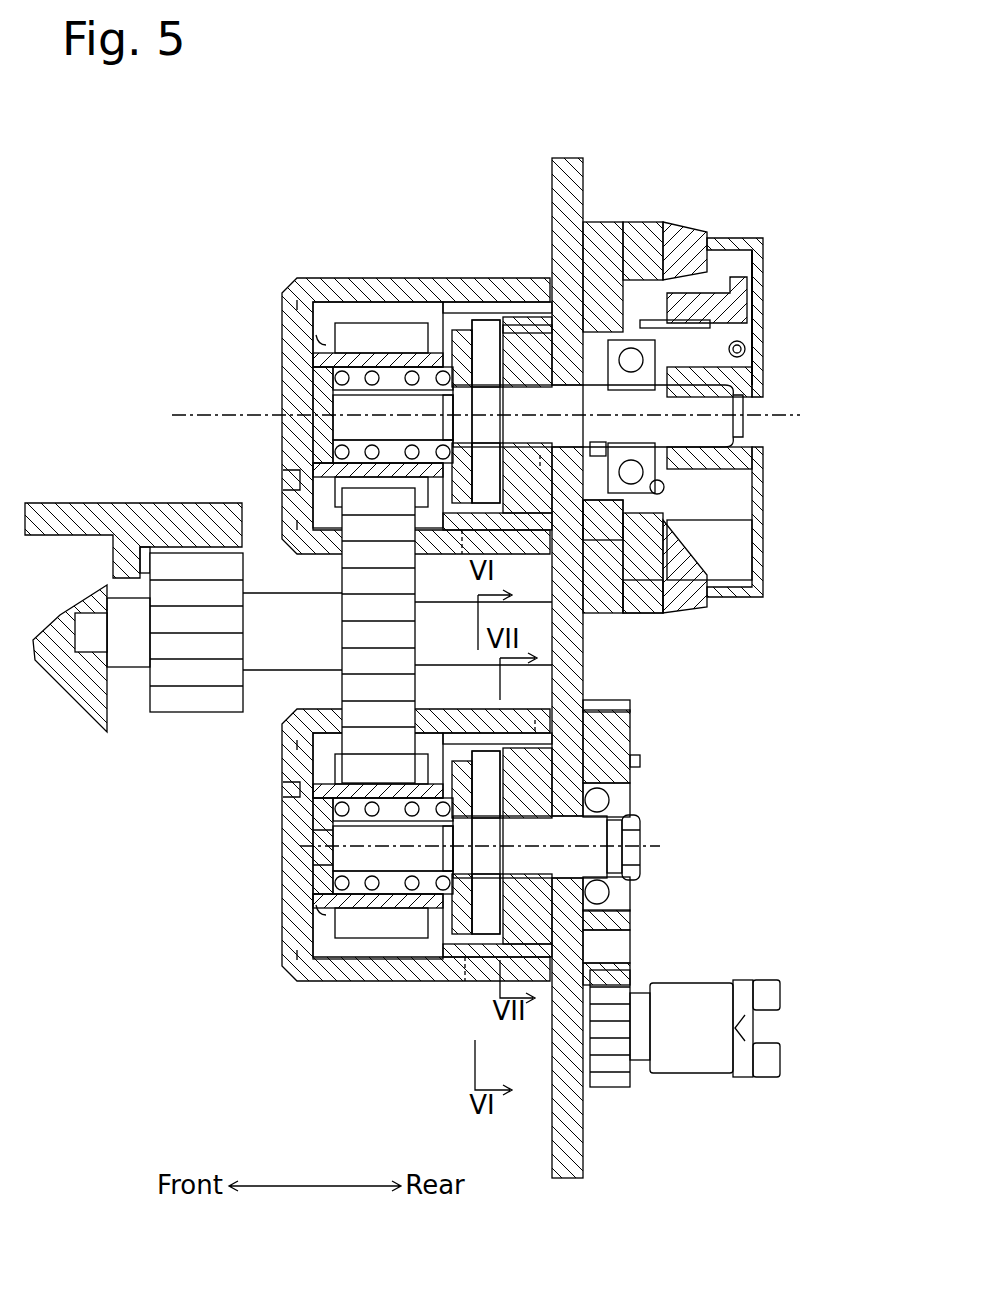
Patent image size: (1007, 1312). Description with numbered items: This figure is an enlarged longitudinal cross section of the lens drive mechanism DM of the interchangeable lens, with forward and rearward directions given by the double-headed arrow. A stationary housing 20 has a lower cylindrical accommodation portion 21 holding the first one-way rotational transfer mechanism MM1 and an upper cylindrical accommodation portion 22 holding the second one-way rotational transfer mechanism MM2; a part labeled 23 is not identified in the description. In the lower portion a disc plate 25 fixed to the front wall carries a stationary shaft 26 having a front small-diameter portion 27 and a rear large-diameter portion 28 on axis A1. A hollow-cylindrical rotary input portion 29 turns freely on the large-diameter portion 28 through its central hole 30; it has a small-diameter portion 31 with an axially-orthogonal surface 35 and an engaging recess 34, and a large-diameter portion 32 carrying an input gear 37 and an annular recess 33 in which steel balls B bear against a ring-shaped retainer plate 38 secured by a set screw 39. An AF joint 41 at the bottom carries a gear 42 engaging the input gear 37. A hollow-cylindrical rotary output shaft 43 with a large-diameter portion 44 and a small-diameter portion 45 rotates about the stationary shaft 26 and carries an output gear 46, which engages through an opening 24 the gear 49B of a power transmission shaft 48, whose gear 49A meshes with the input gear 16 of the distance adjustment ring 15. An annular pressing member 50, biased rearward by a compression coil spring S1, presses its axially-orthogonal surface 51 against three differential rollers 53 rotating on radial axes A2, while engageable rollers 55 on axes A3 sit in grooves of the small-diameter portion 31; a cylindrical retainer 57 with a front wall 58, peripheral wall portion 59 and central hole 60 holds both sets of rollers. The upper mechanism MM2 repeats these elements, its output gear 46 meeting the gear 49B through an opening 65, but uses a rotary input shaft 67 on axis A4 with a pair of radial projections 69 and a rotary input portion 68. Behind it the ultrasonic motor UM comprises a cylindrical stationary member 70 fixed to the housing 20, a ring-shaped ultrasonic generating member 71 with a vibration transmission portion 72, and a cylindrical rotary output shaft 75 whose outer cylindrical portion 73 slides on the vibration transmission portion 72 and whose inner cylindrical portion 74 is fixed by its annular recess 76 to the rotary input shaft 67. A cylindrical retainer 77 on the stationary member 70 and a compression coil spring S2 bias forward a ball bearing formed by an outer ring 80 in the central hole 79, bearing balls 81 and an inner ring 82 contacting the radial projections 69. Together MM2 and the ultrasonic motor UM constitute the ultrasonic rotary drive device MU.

The distance adjustment ring 15 is at (75, 500).
The input gear 16 is at (147, 553).
The stationary housing 20 is at (550, 245).
The lower cylindrical accommodation portion 21 is at (328, 982).
The upper cylindrical accommodation portion 22 is at (318, 300).
The mounting plate lower portion 23 is at (552, 1133).
The opening 24 is at (292, 785).
The disc plate 25 is at (312, 425).
The stationary shaft 26 is at (340, 848).
The front small-diameter portion 27 is at (312, 398).
The rear large-diameter portion 28 is at (765, 408).
The rotary input portion 29 is at (625, 746).
The central hole 30 is at (560, 385).
The small-diameter portion 31 is at (488, 340).
The large-diameter portion 32 is at (625, 748).
The annular recess 33 is at (625, 913).
The engaging recess 34 is at (600, 962).
The axially-orthogonal surface 35 is at (478, 345).
The input gear 37 is at (625, 718).
The ring-shaped retainer plate 38 is at (630, 868).
The set screw 39 is at (640, 823).
The AF joint 41 is at (703, 1070).
The gear 42 is at (607, 1085).
The hollow-cylindrical rotary output shaft 43 is at (357, 345).
The large-diameter portion 44 is at (403, 345).
The small-diameter portion 45 is at (392, 345).
The output gear 46 is at (302, 350).
The power transmission shaft 48 is at (133, 655).
The gear 49A is at (200, 707).
The gear 49B is at (355, 688).
The annular pressing member 50 is at (437, 343).
The axially-orthogonal surface 51 is at (482, 445).
The differential roller 53 is at (505, 540).
The engageable roller 55 is at (547, 325).
The cylindrical retainer 57 is at (645, 590).
The front wall 58 is at (495, 387).
The peripheral wall portion 59 is at (600, 540).
The central hole 60 is at (465, 398).
The opening 65 is at (300, 480).
The rotary input shaft 67 is at (732, 415).
The rotary input portion 68 is at (516, 343).
The radial projections 69 is at (590, 452).
The cylindrical stationary member 70 is at (593, 228).
The ultrasonic generating member 71 is at (652, 232).
The vibration transmission portion 72 is at (688, 240).
The outer cylindrical portion 73 is at (724, 245).
The inner cylindrical portion 74 is at (755, 447).
The cylindrical rotary output shaft 75 is at (770, 302).
The annular recess 76 is at (748, 395).
The cylindrical retainer 77 is at (742, 285).
The central hole 79 is at (720, 342).
The outer ring 80 is at (700, 580).
The bearing balls 81 is at (631, 348).
The inner ring 82 is at (648, 455).
The axis A1 is at (690, 828).
The axis A2 is at (462, 540).
The axis A3 is at (540, 470).
The axis A4 is at (190, 412).
The steel balls B is at (618, 800).
The compression coil spring S1 is at (318, 335).
The compression coil spring S2 is at (735, 352).
The lens drive mechanism DM is at (179, 243).
The ultrasonic rotary drive device MU is at (318, 173).
The first one-way rotational transfer mechanism MM1 is at (748, 845).
The second one-way rotational transfer mechanism MM2 is at (424, 168).
The ultrasonic motor UM is at (730, 156).